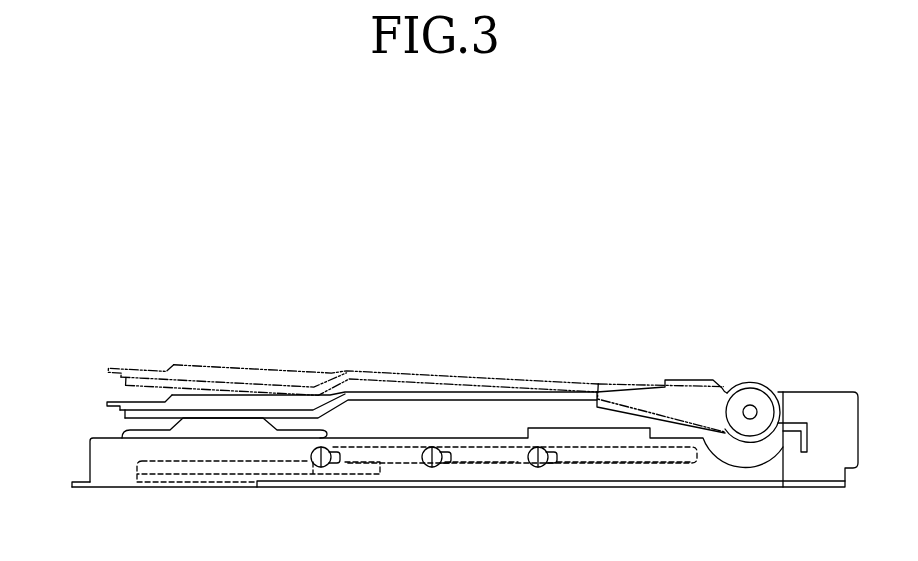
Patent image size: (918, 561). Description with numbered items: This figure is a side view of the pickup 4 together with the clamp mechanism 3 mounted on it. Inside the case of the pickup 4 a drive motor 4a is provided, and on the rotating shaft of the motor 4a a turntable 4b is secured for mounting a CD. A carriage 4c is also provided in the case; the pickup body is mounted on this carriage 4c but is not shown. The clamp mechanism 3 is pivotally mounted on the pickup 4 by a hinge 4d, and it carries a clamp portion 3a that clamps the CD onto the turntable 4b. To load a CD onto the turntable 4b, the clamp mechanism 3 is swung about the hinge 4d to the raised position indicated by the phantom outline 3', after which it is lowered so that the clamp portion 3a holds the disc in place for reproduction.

The clamp mechanism 3 is at (423, 372).
The clamp portion 3a is at (188, 408).
The pivoted position of clamp mechanism 3' is at (417, 373).
The pickup 4 is at (100, 452).
The drive motor 4a is at (150, 480).
The turntable 4b is at (229, 427).
The carriage 4c is at (379, 466).
The hinge 4d is at (752, 397).